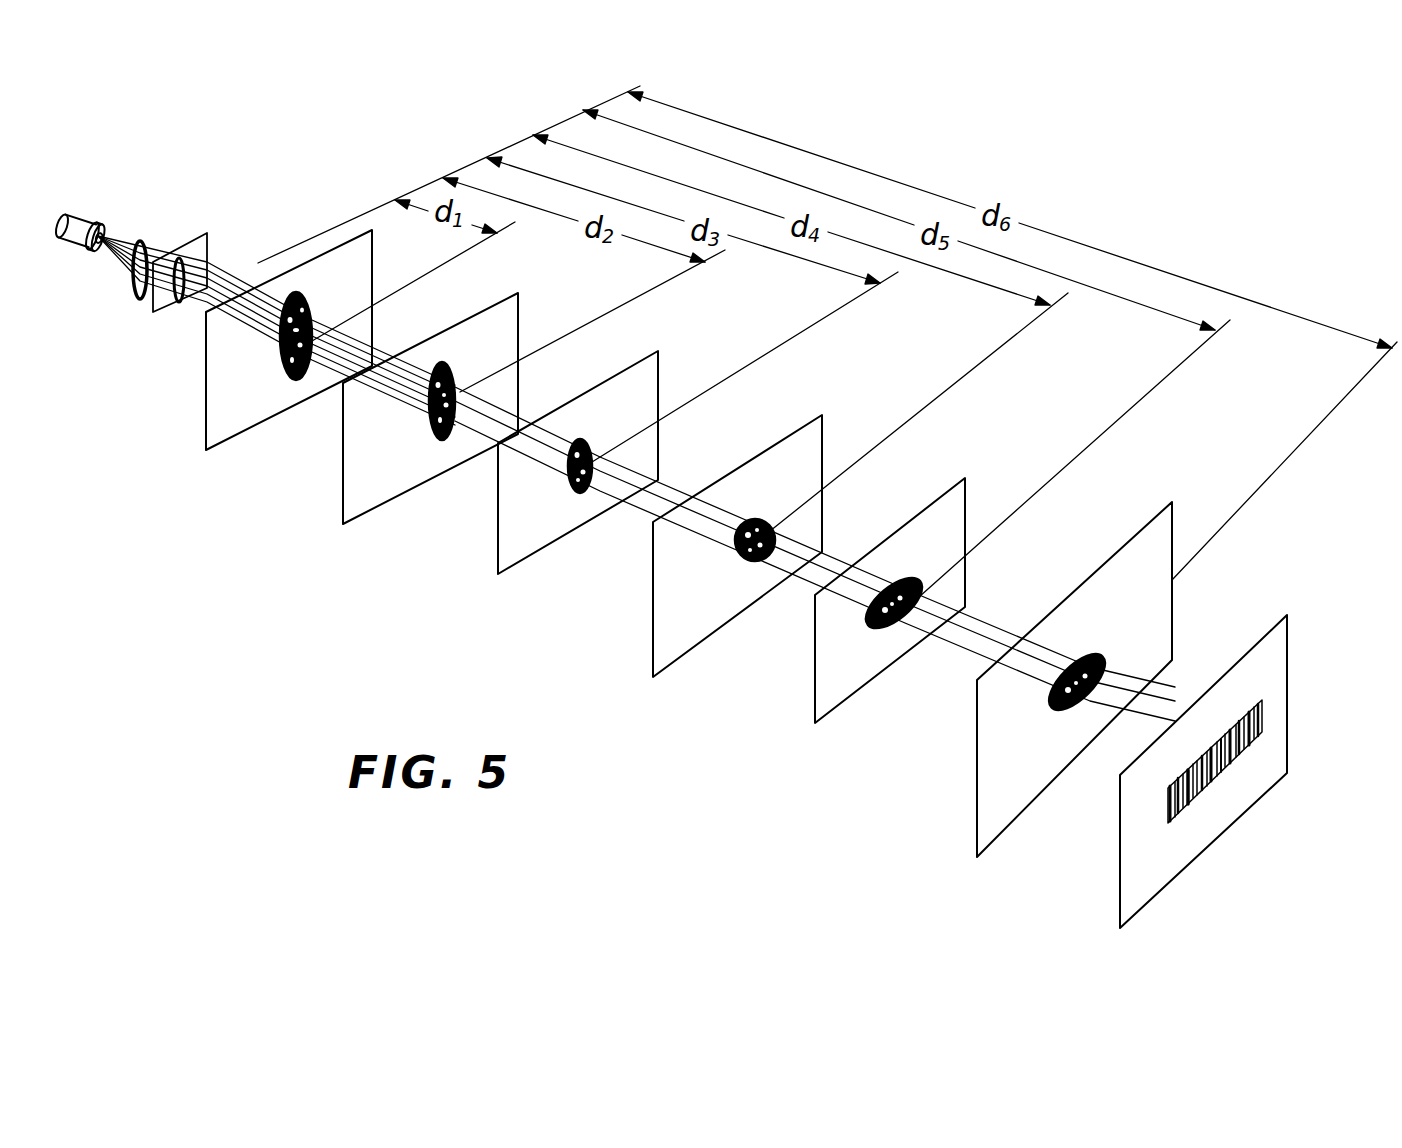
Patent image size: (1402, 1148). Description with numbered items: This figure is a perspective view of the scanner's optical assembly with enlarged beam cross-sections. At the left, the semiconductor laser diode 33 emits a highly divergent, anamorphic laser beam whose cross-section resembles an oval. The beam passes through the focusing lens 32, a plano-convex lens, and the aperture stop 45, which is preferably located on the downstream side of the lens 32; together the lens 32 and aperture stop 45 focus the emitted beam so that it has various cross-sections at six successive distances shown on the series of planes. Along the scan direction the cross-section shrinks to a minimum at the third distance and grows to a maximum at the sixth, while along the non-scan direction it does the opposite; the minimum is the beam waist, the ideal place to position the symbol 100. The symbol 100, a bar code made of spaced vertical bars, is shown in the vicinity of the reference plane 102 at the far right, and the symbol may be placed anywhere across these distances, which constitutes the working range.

The semiconductor laser diode 33 is at (87, 219).
The focusing lens 32 is at (143, 297).
The aperture stop 45 is at (210, 246).
The symbol 100 is at (1212, 792).
The reference plane 102 is at (1133, 912).